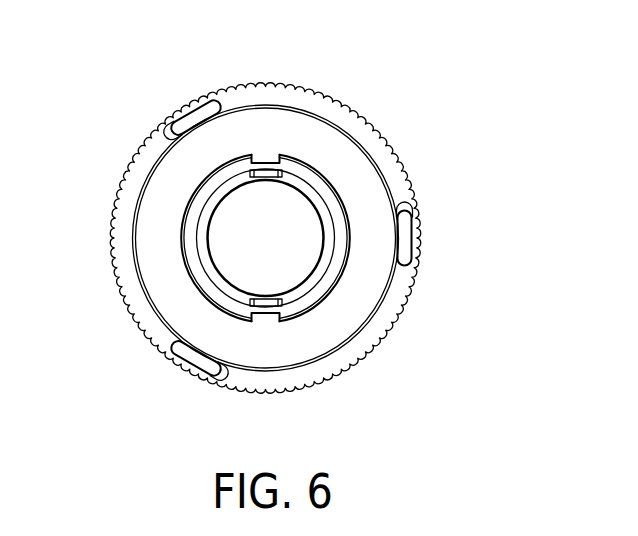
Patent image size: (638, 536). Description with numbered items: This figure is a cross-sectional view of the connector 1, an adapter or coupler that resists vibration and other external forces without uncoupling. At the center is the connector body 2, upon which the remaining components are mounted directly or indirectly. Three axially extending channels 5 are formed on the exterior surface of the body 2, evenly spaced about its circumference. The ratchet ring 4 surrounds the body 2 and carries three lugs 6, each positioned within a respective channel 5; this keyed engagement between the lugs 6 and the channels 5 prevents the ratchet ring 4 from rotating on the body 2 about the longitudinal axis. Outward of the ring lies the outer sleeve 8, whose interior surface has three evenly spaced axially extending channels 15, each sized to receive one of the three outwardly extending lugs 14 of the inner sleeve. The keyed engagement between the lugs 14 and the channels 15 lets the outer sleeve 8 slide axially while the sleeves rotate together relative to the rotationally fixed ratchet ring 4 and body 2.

The connector 1 is at (430, 78).
The connector body 2 is at (323, 277).
The ratchet ring 4 is at (350, 320).
The channels 5 is at (273, 178).
The lugs 6 is at (266, 153).
The outer sleeve 8 is at (396, 166).
The lugs 14 is at (182, 126).
The channels 15 is at (198, 112).